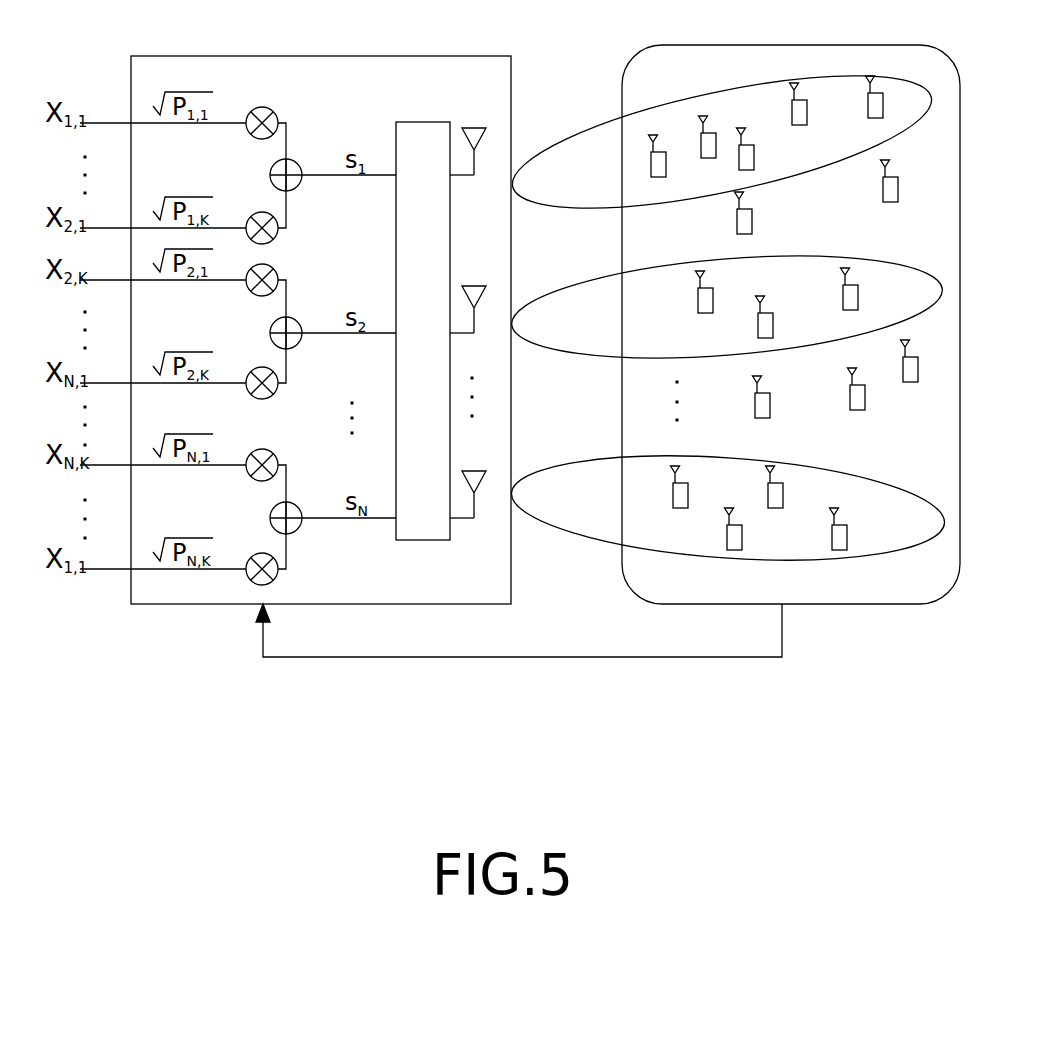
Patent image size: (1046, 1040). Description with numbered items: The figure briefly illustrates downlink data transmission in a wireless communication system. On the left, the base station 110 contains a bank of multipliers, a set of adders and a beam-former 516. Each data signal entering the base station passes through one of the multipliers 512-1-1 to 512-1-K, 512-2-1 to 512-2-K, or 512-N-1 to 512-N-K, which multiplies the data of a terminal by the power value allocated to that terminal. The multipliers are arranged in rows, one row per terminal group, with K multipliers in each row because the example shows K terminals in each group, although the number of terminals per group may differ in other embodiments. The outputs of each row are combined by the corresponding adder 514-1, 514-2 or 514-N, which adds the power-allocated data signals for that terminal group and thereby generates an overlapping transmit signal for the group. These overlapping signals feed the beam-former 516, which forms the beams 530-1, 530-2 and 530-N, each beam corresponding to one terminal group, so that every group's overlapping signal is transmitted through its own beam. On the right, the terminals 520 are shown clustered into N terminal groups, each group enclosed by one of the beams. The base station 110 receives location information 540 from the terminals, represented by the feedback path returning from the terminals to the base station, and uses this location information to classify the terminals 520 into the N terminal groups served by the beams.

The base station 110 is at (407, 57).
The multiplier 512-1-1 is at (272, 111).
The multiplier 512-1-K is at (273, 240).
The multiplier 512-2-1 is at (274, 270).
The multiplier 512-2-K is at (276, 378).
The multiplier 512-N-1 is at (275, 455).
The multiplier 512-N-K is at (273, 580).
The adder 514-1 is at (297, 186).
The adder 514-2 is at (297, 344).
The adder 514-N is at (297, 529).
The beam-former 516 is at (420, 540).
The terminals 520 is at (860, 45).
The beam 530-1 is at (783, 176).
The beam 530-2 is at (853, 263).
The beam 530-N is at (860, 480).
The location information 540 is at (519, 630).